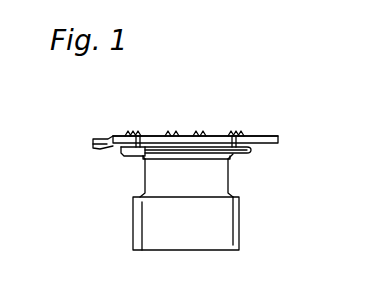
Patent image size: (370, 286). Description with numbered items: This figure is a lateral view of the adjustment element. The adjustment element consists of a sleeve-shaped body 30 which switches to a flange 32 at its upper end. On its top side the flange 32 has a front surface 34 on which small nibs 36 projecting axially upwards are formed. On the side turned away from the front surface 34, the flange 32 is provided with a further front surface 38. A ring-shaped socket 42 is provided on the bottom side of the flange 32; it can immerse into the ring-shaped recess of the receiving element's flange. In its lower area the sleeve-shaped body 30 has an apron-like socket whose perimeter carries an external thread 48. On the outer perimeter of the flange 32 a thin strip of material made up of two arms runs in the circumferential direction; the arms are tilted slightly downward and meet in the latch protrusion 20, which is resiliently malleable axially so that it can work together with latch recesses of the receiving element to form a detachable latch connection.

The latch protrusion 20 is at (95, 150).
The sleeve-shaped body 30 is at (228, 193).
The flange 32 is at (278, 140).
The front surface 34 is at (260, 137).
The small nibs 36 is at (203, 132).
The front surface 38 is at (142, 154).
The ring-shaped socket 42 is at (250, 150).
The external thread 48 is at (138, 222).